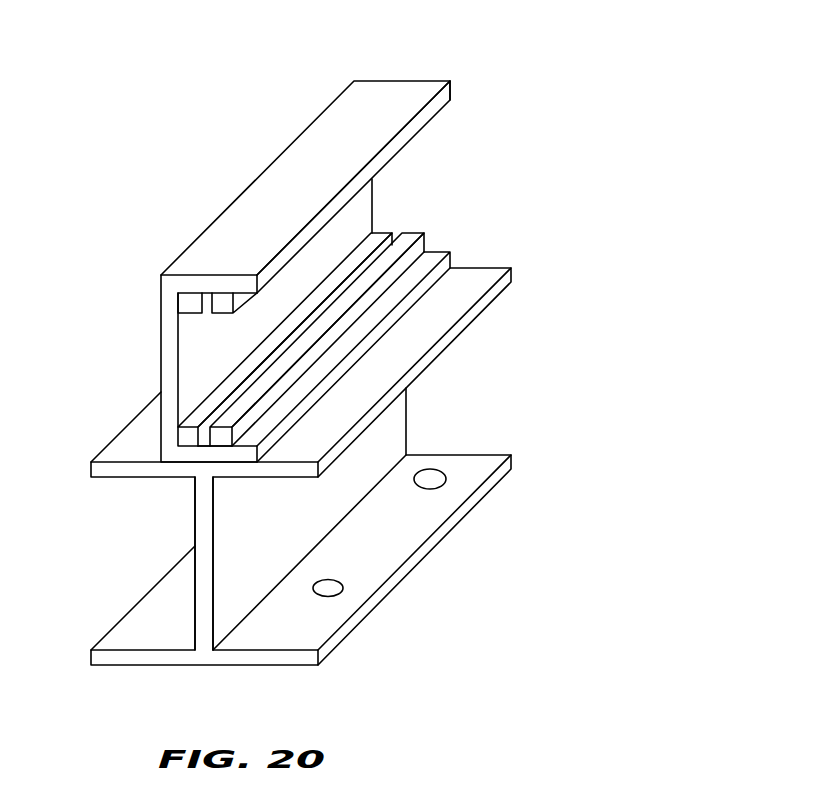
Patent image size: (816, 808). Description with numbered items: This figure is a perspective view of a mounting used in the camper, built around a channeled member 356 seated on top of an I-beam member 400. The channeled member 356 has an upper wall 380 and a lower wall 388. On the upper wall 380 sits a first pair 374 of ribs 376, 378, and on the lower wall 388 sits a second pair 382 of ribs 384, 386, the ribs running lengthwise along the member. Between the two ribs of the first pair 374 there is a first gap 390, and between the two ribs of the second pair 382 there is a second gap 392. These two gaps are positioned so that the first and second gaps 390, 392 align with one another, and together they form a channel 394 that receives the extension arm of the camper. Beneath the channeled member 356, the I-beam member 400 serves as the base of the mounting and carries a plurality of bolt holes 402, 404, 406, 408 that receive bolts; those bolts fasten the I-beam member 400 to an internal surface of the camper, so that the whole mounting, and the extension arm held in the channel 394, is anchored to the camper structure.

The channeled member 356 is at (303, 167).
The first pair of ribs 374 is at (183, 310).
The rib 376 is at (187, 305).
The rib 378 is at (222, 302).
The upper wall 380 is at (415, 102).
The second pair of ribs 382 is at (333, 333).
The rib 384 is at (208, 406).
The rib 386 is at (268, 377).
The lower wall 388 is at (200, 457).
The first gap 390 is at (202, 300).
The second gap 392 is at (275, 353).
The channel 394 is at (200, 437).
The I-beam member 400 is at (310, 622).
The bolt hole 402 is at (336, 586).
The bolt hole 404 is at (438, 478).
The bolt hole 406 is at (193, 588).
The bolt hole 408 is at (195, 527).